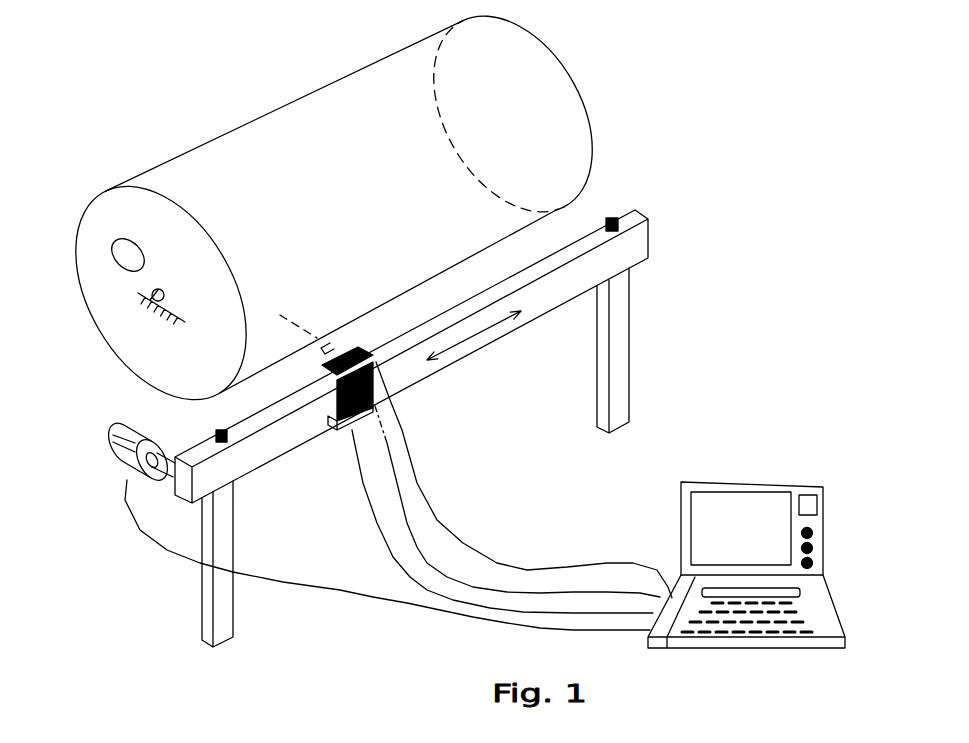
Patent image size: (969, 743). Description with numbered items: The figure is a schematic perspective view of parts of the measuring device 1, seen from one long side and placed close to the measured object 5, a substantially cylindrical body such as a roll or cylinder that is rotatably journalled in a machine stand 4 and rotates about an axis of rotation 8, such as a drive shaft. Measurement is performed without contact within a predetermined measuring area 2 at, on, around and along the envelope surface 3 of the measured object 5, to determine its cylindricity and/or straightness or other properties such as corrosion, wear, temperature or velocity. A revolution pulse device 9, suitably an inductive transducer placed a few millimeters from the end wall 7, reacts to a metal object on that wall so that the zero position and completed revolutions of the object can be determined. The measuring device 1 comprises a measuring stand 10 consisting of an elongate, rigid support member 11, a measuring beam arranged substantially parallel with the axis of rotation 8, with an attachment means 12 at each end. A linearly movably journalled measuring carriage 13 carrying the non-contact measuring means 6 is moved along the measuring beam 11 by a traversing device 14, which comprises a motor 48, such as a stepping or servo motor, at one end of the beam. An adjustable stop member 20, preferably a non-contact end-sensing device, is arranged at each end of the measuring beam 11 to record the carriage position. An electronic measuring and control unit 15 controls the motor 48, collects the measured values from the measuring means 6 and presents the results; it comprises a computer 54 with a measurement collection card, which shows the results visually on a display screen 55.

The measuring device 1 is at (758, 327).
The measuring area 2 is at (587, 222).
The envelope surface 3 is at (353, 97).
The machine stand 4 is at (173, 317).
The measured object 5 is at (238, 99).
The measuring means 6 is at (345, 355).
The end wall 7 is at (100, 210).
The axis of rotation 8 is at (165, 290).
The revolution pulse device 9 is at (134, 250).
The measuring stand 10 is at (534, 372).
The support member 11 is at (640, 245).
The attachment means 12 is at (620, 332).
The measuring carriage 13 is at (325, 432).
The traversing device 14 is at (81, 495).
The electronic measuring and control unit 15 is at (764, 472).
The stop member 20 is at (612, 212).
The motor 48 is at (118, 437).
The computer 54 is at (746, 650).
The display screen 55 is at (702, 520).